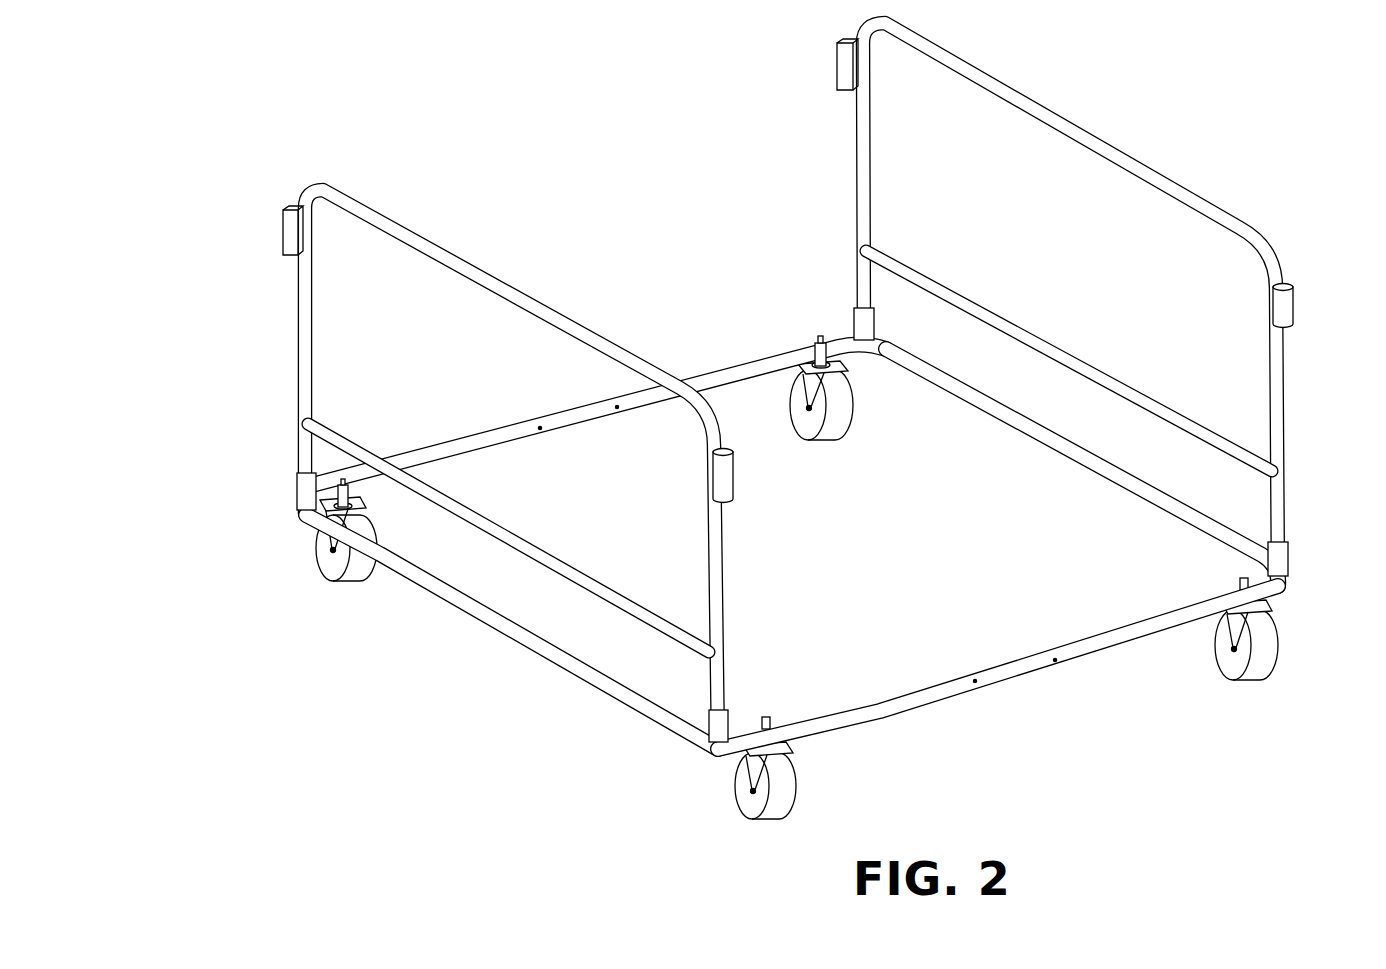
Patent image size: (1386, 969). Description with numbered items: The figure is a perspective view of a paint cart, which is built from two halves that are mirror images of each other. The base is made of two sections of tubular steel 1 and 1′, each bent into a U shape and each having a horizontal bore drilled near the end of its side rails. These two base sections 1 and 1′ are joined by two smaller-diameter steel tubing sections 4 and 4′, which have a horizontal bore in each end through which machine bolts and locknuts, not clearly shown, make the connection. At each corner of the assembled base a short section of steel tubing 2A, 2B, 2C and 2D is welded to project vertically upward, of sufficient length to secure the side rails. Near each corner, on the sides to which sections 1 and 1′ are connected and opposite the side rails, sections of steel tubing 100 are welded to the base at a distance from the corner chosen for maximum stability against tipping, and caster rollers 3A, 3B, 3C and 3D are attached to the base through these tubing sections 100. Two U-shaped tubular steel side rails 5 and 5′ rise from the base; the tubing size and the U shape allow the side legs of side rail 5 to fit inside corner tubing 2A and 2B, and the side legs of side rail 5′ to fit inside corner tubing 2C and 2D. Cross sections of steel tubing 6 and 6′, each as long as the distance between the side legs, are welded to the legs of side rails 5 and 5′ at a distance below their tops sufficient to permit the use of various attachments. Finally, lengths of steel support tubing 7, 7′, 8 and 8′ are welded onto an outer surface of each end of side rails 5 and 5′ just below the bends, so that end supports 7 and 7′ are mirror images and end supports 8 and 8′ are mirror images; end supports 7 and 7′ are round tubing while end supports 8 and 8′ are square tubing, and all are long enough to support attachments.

The base section 1 is at (532, 655).
The base section 1′ is at (1100, 481).
The connecting tubing section 4 is at (1015, 668).
The connecting tubing section 4′ is at (573, 410).
The corner steel tubing 2A is at (732, 722).
The corner steel tubing 2B is at (297, 489).
The corner steel tubing 2C is at (875, 322).
The corner steel tubing 2D is at (1290, 555).
The caster roller 3A is at (775, 821).
The caster roller 3B is at (350, 583).
The caster roller 3C is at (830, 440).
The caster roller 3D is at (1255, 681).
The side rail 5 is at (578, 322).
The side rail 5′ is at (1133, 155).
The cross tubing section 6 is at (584, 575).
The cross tubing section 6′ is at (1048, 356).
The end support 7 is at (735, 481).
The end support 7′ is at (1295, 305).
The end support 8 is at (283, 231).
The end support 8′ is at (833, 62).
The caster tubing section 100 is at (352, 505).